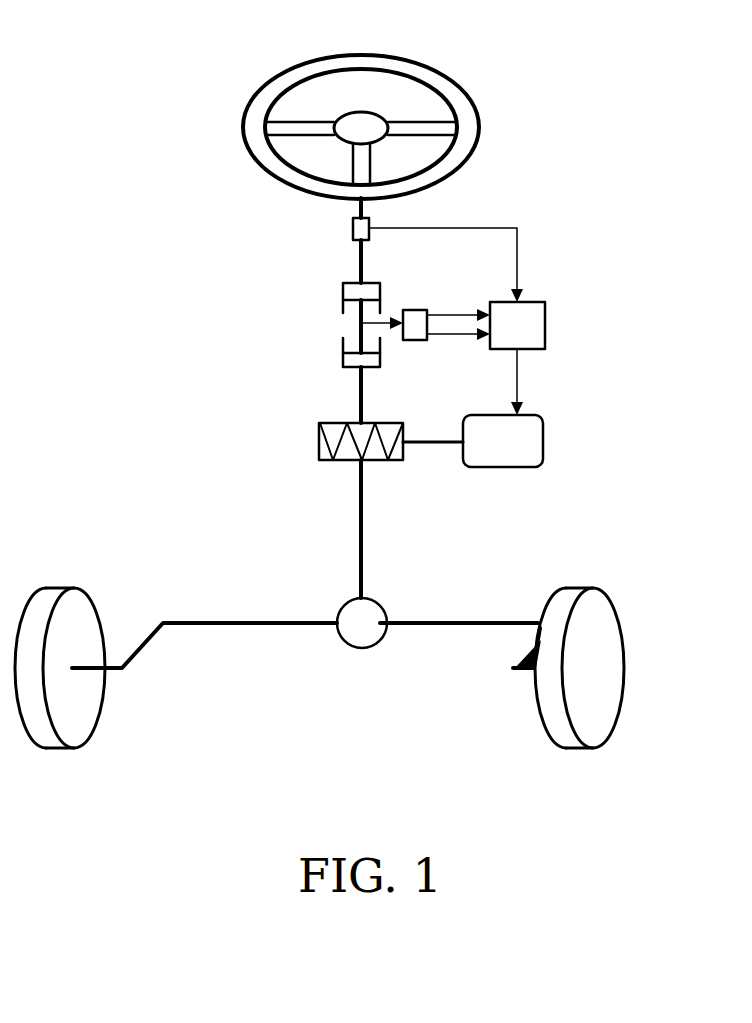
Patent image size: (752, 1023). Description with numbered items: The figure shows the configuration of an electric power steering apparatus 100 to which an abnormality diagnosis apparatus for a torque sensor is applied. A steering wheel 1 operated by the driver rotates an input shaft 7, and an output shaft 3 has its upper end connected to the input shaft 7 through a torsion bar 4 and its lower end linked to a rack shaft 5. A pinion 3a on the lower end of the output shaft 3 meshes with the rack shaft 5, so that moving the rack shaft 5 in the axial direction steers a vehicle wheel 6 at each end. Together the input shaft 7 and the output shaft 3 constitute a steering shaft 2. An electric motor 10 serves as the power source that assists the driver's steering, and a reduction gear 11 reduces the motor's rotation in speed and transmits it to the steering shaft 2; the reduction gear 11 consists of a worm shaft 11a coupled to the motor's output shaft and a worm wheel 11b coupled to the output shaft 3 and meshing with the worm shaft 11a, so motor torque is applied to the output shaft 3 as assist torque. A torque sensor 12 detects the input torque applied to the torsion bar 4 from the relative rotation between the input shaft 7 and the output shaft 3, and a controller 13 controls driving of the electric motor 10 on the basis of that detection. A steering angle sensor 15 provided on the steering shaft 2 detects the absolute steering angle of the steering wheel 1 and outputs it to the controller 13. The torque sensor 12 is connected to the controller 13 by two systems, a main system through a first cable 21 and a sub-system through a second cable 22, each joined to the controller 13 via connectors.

The steering wheel 1 is at (450, 92).
The steering shaft 2 is at (355, 258).
The output shaft 3 is at (358, 388).
The pinion 3a is at (369, 612).
The torsion bar 4 is at (360, 316).
The rack shaft 5 is at (238, 627).
The vehicle wheel 6 is at (79, 607).
The input shaft 7 is at (359, 272).
The electric motor 10 is at (512, 456).
The reduction gear 11 is at (313, 443).
The worm shaft 11a is at (438, 443).
The worm wheel 11b is at (323, 457).
The torque sensor 12 is at (415, 318).
The controller 13 is at (530, 321).
The steering angle sensor 15 is at (361, 231).
The first cable 21 is at (450, 312).
The second cable 22 is at (450, 342).
The electric power steering apparatus 100 is at (540, 252).